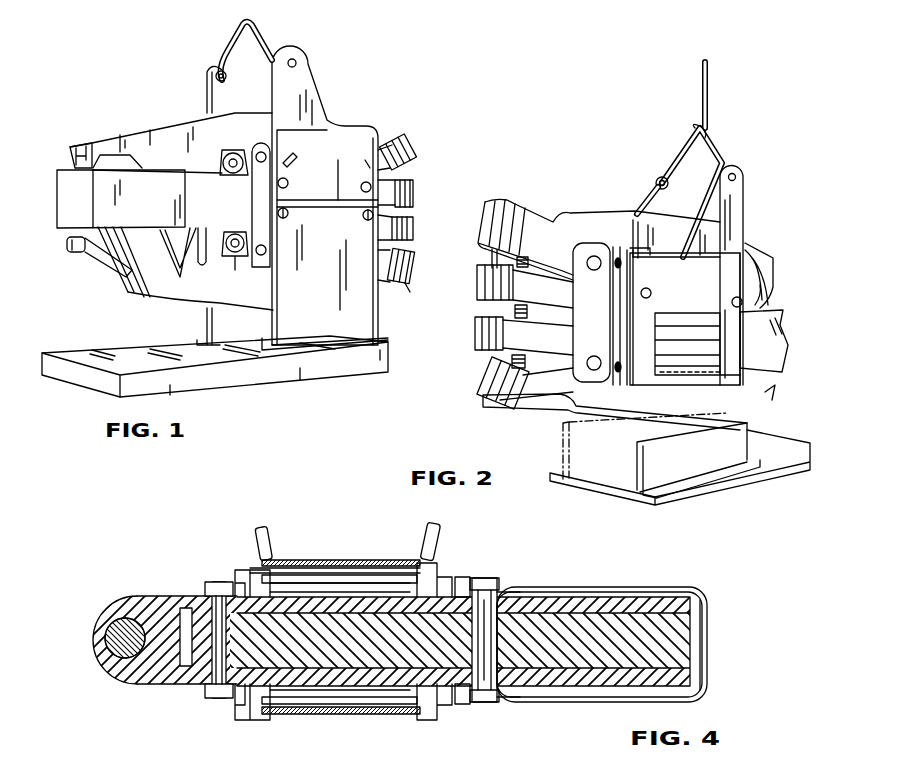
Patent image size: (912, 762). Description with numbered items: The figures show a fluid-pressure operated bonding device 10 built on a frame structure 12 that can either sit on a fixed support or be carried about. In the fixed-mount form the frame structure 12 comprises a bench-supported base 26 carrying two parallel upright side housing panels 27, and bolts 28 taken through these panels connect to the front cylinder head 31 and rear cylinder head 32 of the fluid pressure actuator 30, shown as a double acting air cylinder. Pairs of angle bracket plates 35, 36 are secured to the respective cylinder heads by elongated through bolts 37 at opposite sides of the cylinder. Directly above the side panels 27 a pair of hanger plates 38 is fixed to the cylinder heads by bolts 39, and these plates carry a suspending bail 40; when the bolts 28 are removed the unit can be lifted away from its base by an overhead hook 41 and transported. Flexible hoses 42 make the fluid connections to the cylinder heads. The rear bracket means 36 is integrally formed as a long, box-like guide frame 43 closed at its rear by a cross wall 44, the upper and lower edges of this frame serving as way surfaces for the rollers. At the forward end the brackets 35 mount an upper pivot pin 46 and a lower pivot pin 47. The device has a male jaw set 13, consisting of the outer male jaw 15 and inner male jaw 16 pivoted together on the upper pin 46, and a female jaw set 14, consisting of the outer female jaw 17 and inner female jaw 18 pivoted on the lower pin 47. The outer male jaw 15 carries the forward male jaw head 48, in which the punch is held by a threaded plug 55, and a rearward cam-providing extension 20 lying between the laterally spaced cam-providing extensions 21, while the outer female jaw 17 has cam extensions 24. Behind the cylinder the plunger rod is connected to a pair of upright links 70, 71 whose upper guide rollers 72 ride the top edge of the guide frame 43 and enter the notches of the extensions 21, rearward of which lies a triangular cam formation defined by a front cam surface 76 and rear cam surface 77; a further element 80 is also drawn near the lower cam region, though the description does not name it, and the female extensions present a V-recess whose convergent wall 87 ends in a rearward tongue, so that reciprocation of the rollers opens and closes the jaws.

In FIG. 1, the bonding device 10 is at (376, 104).
In FIG. 2, the bonding device 10 is at (629, 138).
In FIG. 1, the frame structure 12 is at (378, 313).
In FIG. 2, the frame structure 12 is at (757, 226).
In FIG. 1, the male jaw set 13 is at (456, 126).
In FIG. 2, the male jaw set 13 is at (466, 256).
In FIG. 2, the female jaw set 14 is at (471, 304).
In FIG. 1, the outer male jaw 15 is at (413, 147).
In FIG. 2, the outer male jaw 15 is at (511, 205).
In FIG. 4, the outer male jaw 15 is at (90, 622).
In FIG. 1, the inner male jaw 16 is at (420, 200).
In FIG. 2, the inner male jaw 16 is at (477, 276).
In FIG. 1, the outer female jaw 17 is at (406, 279).
In FIG. 2, the outer female jaw 17 is at (487, 400).
In FIG. 1, the inner female jaw 18 is at (421, 236).
In FIG. 2, the inner female jaw 18 is at (475, 335).
In FIG. 1, the cam-providing extension 20 is at (107, 255).
In FIG. 2, the cam-providing extension 20 is at (762, 260).
In FIG. 4, the cam-providing extension 20 is at (567, 618).
In FIG. 4, the cam-providing extensions 21 is at (360, 600).
In FIG. 2, the cam extensions 24 is at (770, 418).
In FIG. 1, the base 26 is at (293, 373).
In FIG. 1, the side housing panels 27 is at (222, 322).
In FIG. 1, the bolts 28 is at (363, 216).
In FIG. 4, the fluid pressure actuator 30 is at (282, 583).
In FIG. 2, the front cylinder head 31 is at (634, 376).
In FIG. 4, the front cylinder head 31 is at (250, 580).
In FIG. 2, the rear cylinder head 32 is at (733, 383).
In FIG. 4, the rear cylinder head 32 is at (433, 580).
In FIG. 4, the angle bracket plates 35 is at (205, 585).
In FIG. 1, the angle bracket plates 36 is at (252, 192).
In FIG. 4, the angle bracket plates 36 is at (468, 588).
In FIG. 1, the through bolts 37 is at (258, 232).
In FIG. 4, the through bolts 37 is at (340, 578).
In FIG. 1, the hanger plates 38 is at (268, 93).
In FIG. 2, the hanger plates 38 is at (705, 170).
In FIG. 4, the hanger plates 38 is at (318, 560).
In FIG. 1, the bolts 39 is at (361, 186).
In FIG. 2, the bolts 39 is at (732, 302).
In FIG. 1, the suspending bail 40 is at (258, 48).
In FIG. 2, the suspending bail 40 is at (722, 160).
In FIG. 2, the overhead hook 41 is at (709, 110).
In FIG. 1, the flexible hoses 42 is at (297, 158).
In FIG. 4, the flexible hoses 42 is at (434, 525).
In FIG. 1, the guide frame 43 is at (167, 173).
In FIG. 2, the guide frame 43 is at (780, 346).
In FIG. 4, the guide frame 43 is at (652, 584).
In FIG. 1, the cross wall 44 is at (78, 205).
In FIG. 4, the cross wall 44 is at (708, 622).
In FIG. 2, the upper pivot pin 46 is at (594, 271).
In FIG. 4, the upper pivot pin 46 is at (183, 683).
In FIG. 2, the lower pivot pin 47 is at (594, 355).
In FIG. 4, the male jaw head 48 is at (137, 596).
In FIG. 4, the plug 55 is at (108, 643).
In FIG. 4, the link 70 is at (500, 690).
In FIG. 4, the link 71 is at (520, 592).
In FIG. 4, the upper guide rollers 72 is at (498, 585).
In FIG. 1, the front cam surface 76 is at (222, 147).
In FIG. 2, the front cam surface 76 is at (760, 300).
In FIG. 1, the rear cam surface 77 is at (128, 162).
In FIG. 1, the bracket 80 is at (187, 270).
In FIG. 2, the bracket 80 is at (768, 388).
In FIG. 1, the convergent wall 87 is at (170, 268).